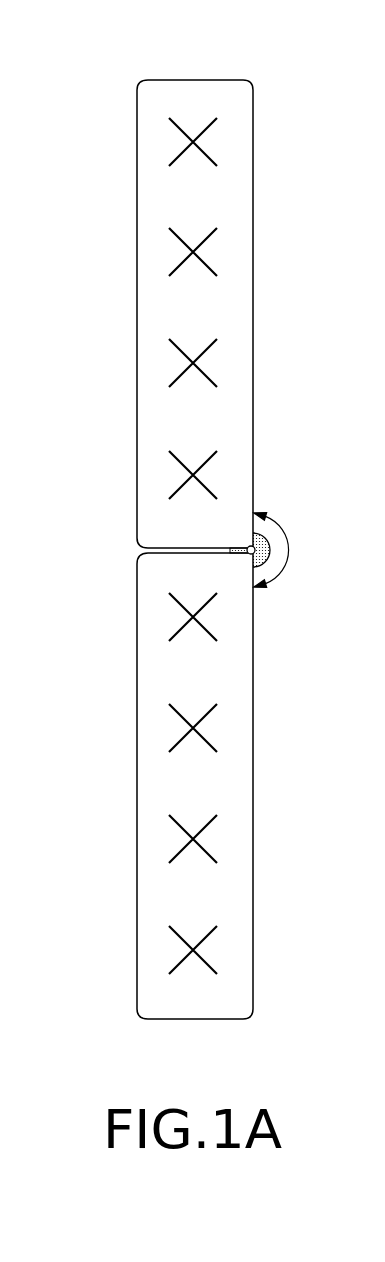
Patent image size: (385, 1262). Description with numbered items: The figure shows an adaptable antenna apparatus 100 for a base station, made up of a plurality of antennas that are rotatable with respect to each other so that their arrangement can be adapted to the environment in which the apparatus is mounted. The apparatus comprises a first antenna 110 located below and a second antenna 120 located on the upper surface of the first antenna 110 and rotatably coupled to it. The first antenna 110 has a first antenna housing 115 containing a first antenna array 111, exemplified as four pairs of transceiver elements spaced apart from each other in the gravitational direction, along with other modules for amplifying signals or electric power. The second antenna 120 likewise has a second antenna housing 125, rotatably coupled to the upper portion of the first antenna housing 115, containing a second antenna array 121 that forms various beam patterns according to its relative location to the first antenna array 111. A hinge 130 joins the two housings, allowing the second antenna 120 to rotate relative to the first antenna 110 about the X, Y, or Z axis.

The adaptable antenna apparatus 100 is at (123, 44).
The first antenna 110 is at (137, 812).
The first antenna array 111 is at (195, 838).
The first antenna housing 115 is at (243, 783).
The second antenna 120 is at (137, 312).
The second antenna array 121 is at (192, 139).
The second antenna housing 125 is at (194, 308).
The hinge 130 is at (268, 550).